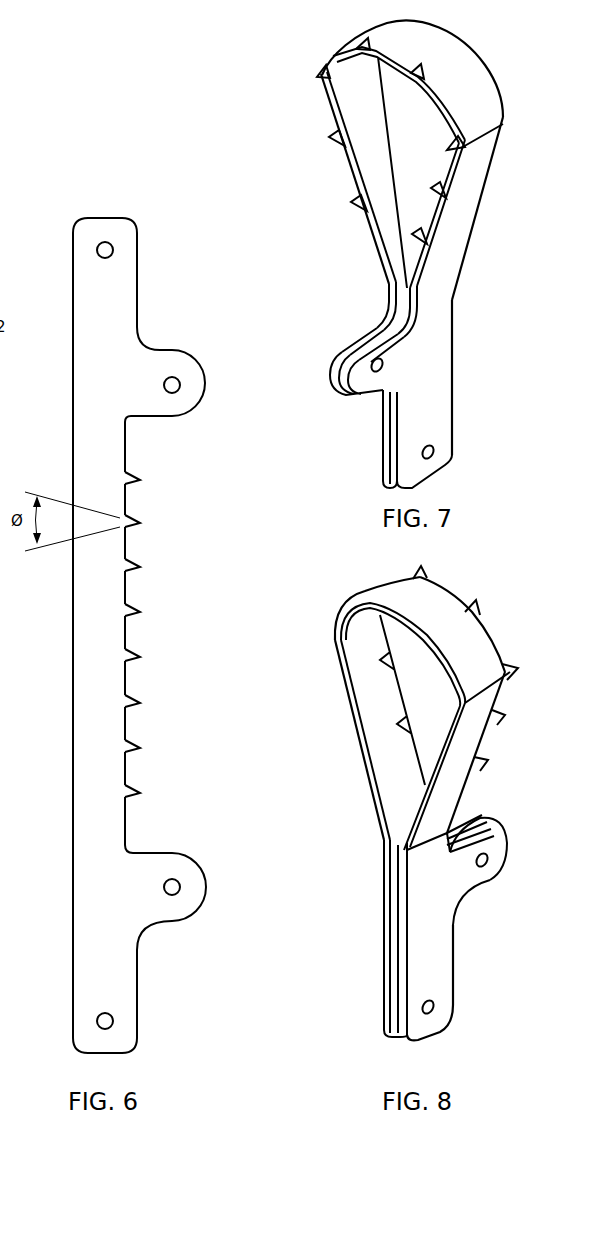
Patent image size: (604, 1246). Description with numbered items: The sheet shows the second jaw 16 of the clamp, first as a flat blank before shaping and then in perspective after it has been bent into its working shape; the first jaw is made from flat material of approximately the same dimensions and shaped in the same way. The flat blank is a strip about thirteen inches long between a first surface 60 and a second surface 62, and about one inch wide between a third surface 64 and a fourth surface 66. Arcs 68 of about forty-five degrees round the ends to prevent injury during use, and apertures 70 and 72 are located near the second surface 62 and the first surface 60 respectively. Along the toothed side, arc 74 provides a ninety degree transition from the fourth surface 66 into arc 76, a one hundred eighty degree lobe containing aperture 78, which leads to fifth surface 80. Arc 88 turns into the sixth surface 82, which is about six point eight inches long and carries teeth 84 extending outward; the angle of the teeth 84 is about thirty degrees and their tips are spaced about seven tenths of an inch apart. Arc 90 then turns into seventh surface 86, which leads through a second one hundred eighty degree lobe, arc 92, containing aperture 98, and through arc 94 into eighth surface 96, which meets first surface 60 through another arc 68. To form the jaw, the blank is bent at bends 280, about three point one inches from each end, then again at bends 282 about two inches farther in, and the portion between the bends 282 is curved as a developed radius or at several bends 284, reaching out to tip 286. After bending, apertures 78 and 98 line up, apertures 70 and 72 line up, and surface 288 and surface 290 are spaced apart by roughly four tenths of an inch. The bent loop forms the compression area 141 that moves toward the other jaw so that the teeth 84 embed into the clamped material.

In FIG. 6, the second jaw 16 is at (80, 180).
In FIG. 7, the second jaw 16 is at (312, 58).
In FIG. 8, the second jaw 16 is at (355, 577).
In FIG. 6, the first surface 60 is at (105, 217).
In FIG. 7, the first surface 60 is at (437, 475).
In FIG. 8, the first surface 60 is at (385, 1031).
In FIG. 6, the second surface 62 is at (100, 1055).
In FIG. 8, the second surface 62 is at (430, 1035).
In FIG. 6, the third surface 64 is at (73, 640).
In FIG. 7, the third surface 64 is at (480, 65).
In FIG. 8, the third surface 64 is at (340, 685).
In FIG. 6, the fourth surface 66 is at (138, 980).
In FIG. 6, the arcs 68 is at (80, 221).
In FIG. 6, the aperture 70 is at (100, 1022).
In FIG. 8, the aperture 70 is at (434, 1008).
In FIG. 6, the aperture 72 is at (100, 255).
In FIG. 7, the aperture 72 is at (433, 452).
In FIG. 8, the aperture 72 is at (400, 985).
In FIG. 6, the arc 74 is at (150, 925).
In FIG. 8, the arc 74 is at (460, 912).
In FIG. 6, the arc 76 is at (192, 860).
In FIG. 8, the arc 76 is at (510, 843).
In FIG. 6, the aperture 78 is at (166, 886).
In FIG. 8, the aperture 78 is at (487, 866).
In FIG. 6, the fifth surface 80 is at (160, 853).
In FIG. 8, the fifth surface 80 is at (490, 825).
In FIG. 6, the sixth surface 82 is at (125, 540).
In FIG. 7, the sixth surface 82 is at (340, 107).
In FIG. 8, the sixth surface 82 is at (490, 640).
In FIG. 6, the teeth 84 is at (140, 520).
In FIG. 7, the teeth 84 is at (437, 188).
In FIG. 8, the teeth 84 is at (468, 610).
In FIG. 6, the seventh surface 86 is at (170, 418).
In FIG. 7, the seventh surface 86 is at (380, 330).
In FIG. 6, the arc 88 is at (130, 848).
In FIG. 8, the arc 88 is at (458, 856).
In FIG. 6, the arc 90 is at (130, 422).
In FIG. 7, the arc 90 is at (410, 300).
In FIG. 6, the arc 92 is at (200, 365).
In FIG. 7, the arc 92 is at (355, 392).
In FIG. 6, the arc 94 is at (143, 335).
In FIG. 7, the arc 94 is at (385, 415).
In FIG. 6, the eighth surface 96 is at (138, 260).
In FIG. 6, the aperture 98 is at (166, 384).
In FIG. 7, the aperture 98 is at (382, 362).
In FIG. 7, the compression area 141 is at (478, 163).
In FIG. 8, the compression area 141 is at (470, 745).
In FIG. 7, the bends 280 is at (413, 292).
In FIG. 8, the bends 280 is at (395, 840).
In FIG. 7, the bends 282 is at (500, 143).
In FIG. 8, the bends 282 is at (470, 700).
In FIG. 8, the bends 284 is at (340, 630).
In FIG. 7, the tip 286 is at (445, 37).
In FIG. 8, the surface 288 is at (440, 960).
In FIG. 7, the surface 290 is at (437, 383).